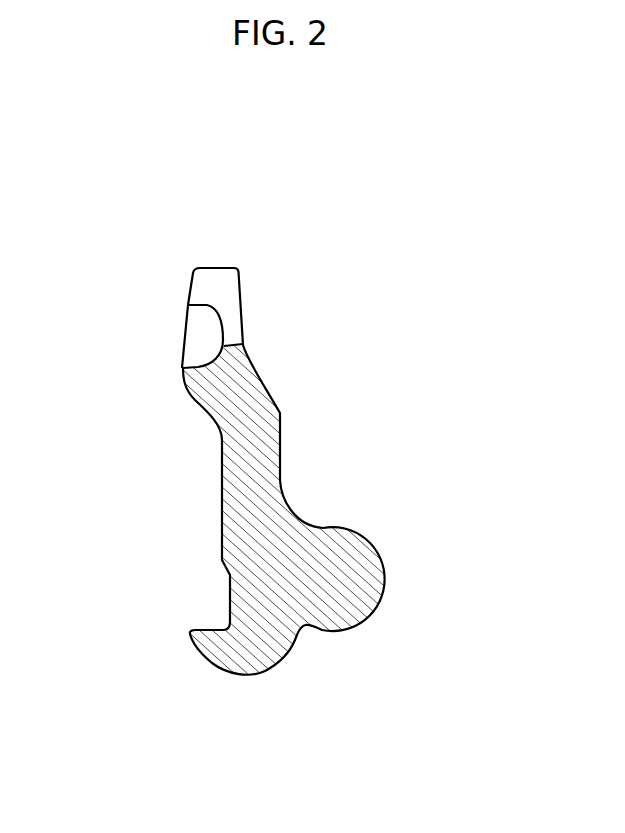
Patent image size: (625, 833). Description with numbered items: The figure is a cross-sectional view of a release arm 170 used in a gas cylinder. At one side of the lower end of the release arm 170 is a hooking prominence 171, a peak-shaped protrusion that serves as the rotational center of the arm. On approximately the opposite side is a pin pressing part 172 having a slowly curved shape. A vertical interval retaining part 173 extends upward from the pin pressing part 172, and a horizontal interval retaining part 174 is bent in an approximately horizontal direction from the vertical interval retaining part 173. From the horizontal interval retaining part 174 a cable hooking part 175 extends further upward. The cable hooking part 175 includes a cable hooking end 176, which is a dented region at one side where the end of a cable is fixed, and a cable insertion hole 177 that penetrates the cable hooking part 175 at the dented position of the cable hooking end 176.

The release arm 170 is at (259, 253).
The hooking prominence 171 is at (198, 638).
The pin pressing part 172 is at (366, 592).
The vertical interval retaining part 173 is at (262, 468).
The horizontal interval retaining part 174 is at (222, 423).
The cable hooking part 175 is at (207, 272).
The cable hooking end 176 is at (197, 333).
The cable insertion hole 177 is at (235, 332).